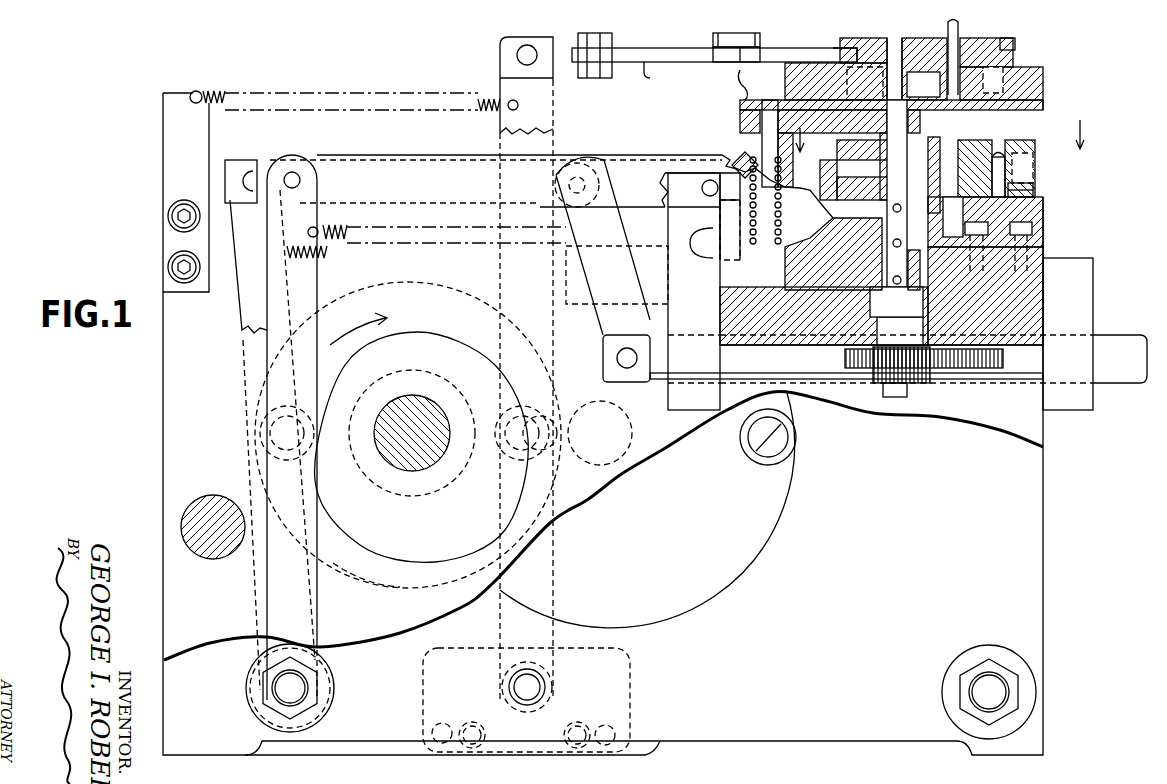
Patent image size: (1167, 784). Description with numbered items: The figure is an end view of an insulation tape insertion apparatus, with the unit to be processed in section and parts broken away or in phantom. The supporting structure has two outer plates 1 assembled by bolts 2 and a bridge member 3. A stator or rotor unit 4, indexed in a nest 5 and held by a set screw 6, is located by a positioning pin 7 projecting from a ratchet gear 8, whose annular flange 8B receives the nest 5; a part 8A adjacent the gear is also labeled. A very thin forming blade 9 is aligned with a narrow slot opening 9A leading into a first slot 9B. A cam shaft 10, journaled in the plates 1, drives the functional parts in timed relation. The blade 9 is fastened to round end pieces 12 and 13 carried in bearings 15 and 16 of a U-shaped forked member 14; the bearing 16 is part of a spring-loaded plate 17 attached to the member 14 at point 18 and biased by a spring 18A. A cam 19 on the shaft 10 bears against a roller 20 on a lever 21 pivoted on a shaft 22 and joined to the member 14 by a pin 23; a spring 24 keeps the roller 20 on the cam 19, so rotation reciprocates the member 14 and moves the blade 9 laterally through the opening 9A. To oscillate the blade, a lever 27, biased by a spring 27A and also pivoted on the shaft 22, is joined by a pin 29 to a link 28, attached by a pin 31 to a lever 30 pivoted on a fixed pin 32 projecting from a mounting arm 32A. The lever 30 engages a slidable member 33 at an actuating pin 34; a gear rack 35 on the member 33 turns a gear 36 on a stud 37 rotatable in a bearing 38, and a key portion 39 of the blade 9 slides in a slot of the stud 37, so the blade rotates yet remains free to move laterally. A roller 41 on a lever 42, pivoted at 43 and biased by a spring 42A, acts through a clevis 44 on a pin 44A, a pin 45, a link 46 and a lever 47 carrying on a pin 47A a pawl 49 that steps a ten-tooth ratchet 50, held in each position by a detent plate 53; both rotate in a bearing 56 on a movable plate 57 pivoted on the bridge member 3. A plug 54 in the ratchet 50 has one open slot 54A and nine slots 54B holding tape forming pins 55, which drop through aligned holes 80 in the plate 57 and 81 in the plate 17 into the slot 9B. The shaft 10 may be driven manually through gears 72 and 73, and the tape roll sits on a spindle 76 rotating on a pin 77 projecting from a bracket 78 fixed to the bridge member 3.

The outer plates 1 is at (1030, 552).
The bolts 2 is at (181, 520).
The bridge member 3 is at (892, 178).
The stator or rotor unit 4 is at (975, 142).
The nest 5 is at (1022, 142).
The set screw 6 is at (943, 169).
The positioning pin 7 is at (1000, 155).
The ratchet gear 8 is at (1030, 188).
The screw head 8A is at (1033, 195).
The annular flange 8B is at (1033, 158).
The forming blade 9 is at (892, 180).
The slot opening 9A is at (882, 148).
The first slot 9B is at (955, 205).
The cam shaft 10 is at (430, 422).
The round end piece 12 is at (888, 222).
The round end piece 13 is at (905, 120).
The U-shaped forked member 14 is at (450, 155).
The bearing 15 is at (885, 272).
The bearing 16 is at (919, 125).
The spring-loaded plate 17 is at (808, 105).
The attachment point 18 is at (742, 122).
The spring 18A is at (745, 162).
The cam 19 is at (425, 332).
The roller 20 is at (260, 436).
The lever 21 is at (318, 290).
The shaft 22 is at (280, 688).
The pin 23 is at (288, 176).
The spring 24 is at (420, 238).
The lever 27 is at (240, 312).
The spring 27A is at (405, 268).
The link 28 is at (232, 160).
The pin 29 is at (248, 182).
The lever 30 is at (625, 285).
The pin 31 is at (582, 170).
The fixed pin 32 is at (615, 262).
The mounting arm 32A is at (650, 262).
The slidable member 33 is at (1135, 398).
The actuating pin 34 is at (627, 368).
The gear rack 35 is at (975, 368).
The gear 36 is at (918, 375).
The stud 37 is at (985, 296).
The bearing 38 is at (858, 332).
The key portion 39 is at (872, 300).
The roller 41 is at (545, 455).
The lever 42 is at (556, 104).
The spring 42A is at (350, 93).
The pivot 43 is at (535, 689).
The clevis 44 is at (605, 50).
The pin 44A is at (515, 52).
The pin 45 is at (585, 36).
The link 46 is at (650, 76).
The lever 47 is at (762, 40).
The pin 47A is at (732, 34).
The pawl 49 is at (808, 48).
The ratchet 50 is at (1004, 64).
The detent plate 53 is at (1016, 48).
The plug 54 is at (925, 42).
The open slot 54A is at (897, 40).
The slots 54B is at (1000, 40).
The tape forming pins 55 is at (960, 30).
The bearing 56 is at (1044, 76).
The movable plate 57 is at (1044, 98).
The gear 72 is at (380, 592).
The gear 73 is at (634, 448).
The spindle 76 is at (940, 140).
The pin 77 is at (928, 192).
The bracket 78 is at (930, 225).
The hole 80 is at (923, 84).
The hole 81 is at (853, 86).